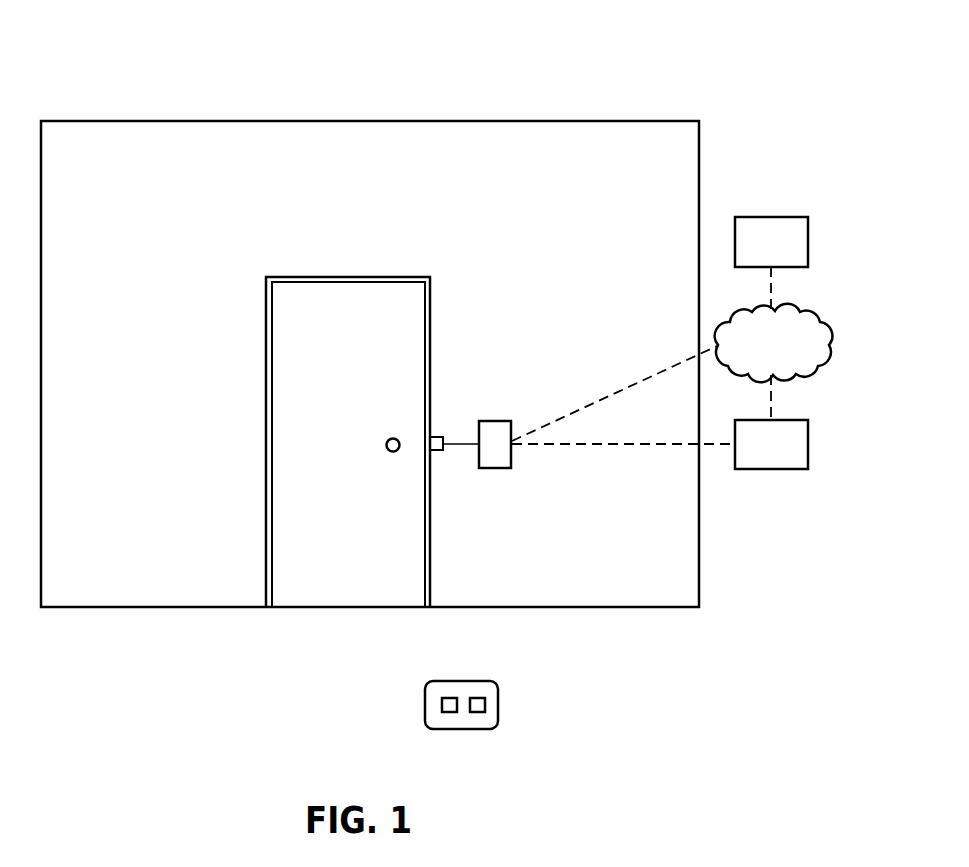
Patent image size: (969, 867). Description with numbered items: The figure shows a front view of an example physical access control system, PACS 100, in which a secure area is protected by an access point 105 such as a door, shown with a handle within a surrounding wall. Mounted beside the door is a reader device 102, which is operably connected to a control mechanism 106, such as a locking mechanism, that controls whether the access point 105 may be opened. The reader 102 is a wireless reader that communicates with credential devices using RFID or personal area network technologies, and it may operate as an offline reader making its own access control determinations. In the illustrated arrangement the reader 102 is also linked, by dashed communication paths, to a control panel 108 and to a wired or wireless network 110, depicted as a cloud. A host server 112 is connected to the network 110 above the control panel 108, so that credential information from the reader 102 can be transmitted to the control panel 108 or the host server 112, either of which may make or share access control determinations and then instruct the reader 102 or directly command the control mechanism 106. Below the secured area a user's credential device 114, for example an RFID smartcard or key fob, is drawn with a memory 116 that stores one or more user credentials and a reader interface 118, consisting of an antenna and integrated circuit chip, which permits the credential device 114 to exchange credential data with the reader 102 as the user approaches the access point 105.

The PACS 100 is at (660, 50).
The reader device 102 is at (503, 420).
The access point 105 is at (413, 326).
The control mechanism 106 is at (440, 451).
The control panel 108 is at (762, 470).
The network 110 is at (800, 376).
The host server 112 is at (790, 268).
The credential device 114 is at (424, 703).
The memory 116 is at (455, 714).
The reader interface 118 is at (487, 699).